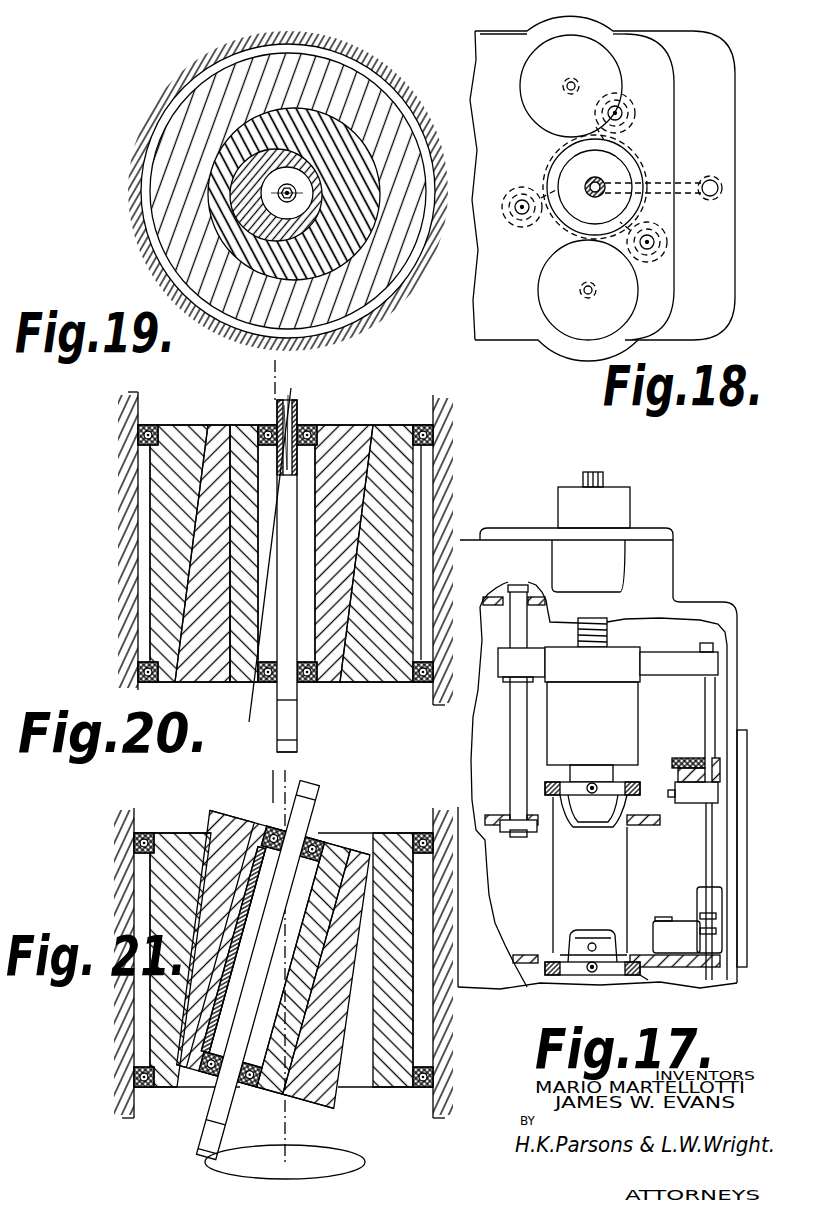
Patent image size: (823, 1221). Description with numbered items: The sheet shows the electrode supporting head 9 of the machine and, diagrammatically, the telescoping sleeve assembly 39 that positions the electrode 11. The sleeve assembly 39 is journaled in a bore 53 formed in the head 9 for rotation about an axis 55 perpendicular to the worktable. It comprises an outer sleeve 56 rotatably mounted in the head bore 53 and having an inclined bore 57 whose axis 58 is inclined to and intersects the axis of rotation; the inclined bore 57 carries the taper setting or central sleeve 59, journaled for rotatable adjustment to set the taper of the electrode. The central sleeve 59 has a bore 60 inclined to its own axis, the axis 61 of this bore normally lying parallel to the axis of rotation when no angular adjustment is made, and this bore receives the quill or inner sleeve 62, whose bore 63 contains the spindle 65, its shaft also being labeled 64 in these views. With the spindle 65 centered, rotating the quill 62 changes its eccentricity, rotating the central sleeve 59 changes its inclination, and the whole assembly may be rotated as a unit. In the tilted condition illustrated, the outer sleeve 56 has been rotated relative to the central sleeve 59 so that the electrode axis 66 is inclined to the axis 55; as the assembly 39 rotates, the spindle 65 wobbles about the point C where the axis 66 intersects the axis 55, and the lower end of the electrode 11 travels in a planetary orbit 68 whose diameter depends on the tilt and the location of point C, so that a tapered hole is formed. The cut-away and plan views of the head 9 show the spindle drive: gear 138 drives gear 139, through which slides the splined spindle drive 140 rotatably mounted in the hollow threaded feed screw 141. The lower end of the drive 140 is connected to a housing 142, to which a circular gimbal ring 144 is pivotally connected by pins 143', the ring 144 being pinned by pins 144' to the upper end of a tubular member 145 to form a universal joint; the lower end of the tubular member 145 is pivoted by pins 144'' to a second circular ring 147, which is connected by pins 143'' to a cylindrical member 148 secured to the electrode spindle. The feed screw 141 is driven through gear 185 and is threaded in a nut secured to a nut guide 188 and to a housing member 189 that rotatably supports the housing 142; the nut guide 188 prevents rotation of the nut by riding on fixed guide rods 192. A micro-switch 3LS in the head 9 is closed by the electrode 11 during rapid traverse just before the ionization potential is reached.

In FIG. 19, the head 9 is at (361, 52).
In FIG. 20, the head 9 is at (438, 393).
In FIG. 21, the head 9 is at (123, 825).
In FIG. 17, the head 9 is at (675, 568).
In FIG. 20, the electrode 11 is at (293, 743).
In FIG. 21, the electrode 11 is at (308, 783).
In FIG. 20, the telescoping sleeve assembly 39 is at (163, 425).
In FIG. 21, the telescoping sleeve assembly 39 is at (150, 870).
In FIG. 19, the bore 53 is at (405, 112).
In FIG. 20, the bore 53 is at (133, 410).
In FIG. 21, the bore 53 is at (433, 833).
In FIG. 20, the axis 55 is at (287, 723).
In FIG. 21, the axis 55 is at (285, 1097).
In FIG. 19, the outer sleeve 56 is at (160, 178).
In FIG. 20, the outer sleeve 56 is at (188, 432).
In FIG. 21, the outer sleeve 56 is at (163, 837).
In FIG. 19, the inclined bore 57 is at (225, 145).
In FIG. 20, the inclined bore 57 is at (195, 525).
In FIG. 21, the inclined bore 57 is at (200, 885).
In FIG. 20, the axis 58 is at (252, 698).
In FIG. 19, the taper setting sleeve 59 is at (365, 172).
In FIG. 20, the taper setting sleeve 59 is at (357, 427).
In FIG. 21, the taper setting sleeve 59 is at (210, 810).
In FIG. 19, the bore 60 is at (232, 205).
In FIG. 20, the bore 60 is at (233, 545).
In FIG. 21, the bore 60 is at (230, 925).
In FIG. 19, the axis 61 is at (270, 193).
In FIG. 21, the axis 61 is at (273, 783).
In FIG. 19, the quill 62 is at (250, 140).
In FIG. 20, the quill 62 is at (233, 573).
In FIG. 21, the quill 62 is at (313, 857).
In FIG. 19, the bore 63 is at (312, 168).
In FIG. 20, the bore 63 is at (360, 507).
In FIG. 21, the bore 63 is at (290, 945).
In FIG. 20, the shaft 64 is at (287, 437).
In FIG. 21, the shaft 64 is at (203, 1160).
In FIG. 19, the spindle 65 is at (292, 198).
In FIG. 20, the spindle 65 is at (292, 482).
In FIG. 21, the spindle 65 is at (213, 1100).
In FIG. 20, the axis 66 is at (287, 726).
In FIG. 21, the axis 66 is at (211, 1137).
In FIG. 21, the planetary orbit 68 is at (363, 1153).
In FIG. 21, the point C is at (285, 880).
In FIG. 18, the gear 138 is at (558, 332).
In FIG. 18, the gear 139 is at (645, 173).
In FIG. 17, the splined spindle drive 140 is at (593, 472).
In FIG. 17, the feed screw 141 is at (610, 633).
In FIG. 17, the housing 142 is at (617, 775).
In FIG. 17, the pivot pin 143' is at (612, 760).
In FIG. 17, the pins 143'' is at (576, 987).
In FIG. 17, the gimbal ring 144 is at (560, 784).
In FIG. 17, the pins 144' is at (678, 881).
In FIG. 17, the pins 144'' is at (681, 994).
In FIG. 17, the tubular member 145 is at (553, 863).
In FIG. 17, the second circular ring 147 is at (570, 977).
In FIG. 17, the cylindrical member 148 is at (600, 980).
In FIG. 18, the gear 185 is at (620, 94).
In FIG. 17, the nut guide 188 is at (642, 648).
In FIG. 17, the housing member 189 is at (640, 702).
In FIG. 18, the guide rods 192 is at (632, 113).
In FIG. 17, the guide rods 192 is at (510, 707).
In FIG. 17, the micro-switch 3LS is at (702, 927).